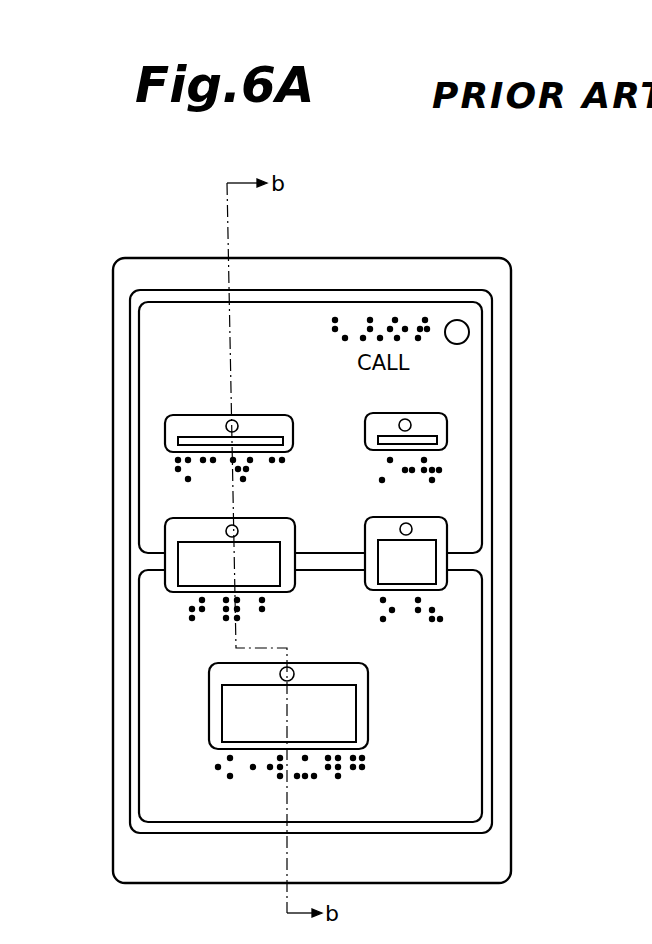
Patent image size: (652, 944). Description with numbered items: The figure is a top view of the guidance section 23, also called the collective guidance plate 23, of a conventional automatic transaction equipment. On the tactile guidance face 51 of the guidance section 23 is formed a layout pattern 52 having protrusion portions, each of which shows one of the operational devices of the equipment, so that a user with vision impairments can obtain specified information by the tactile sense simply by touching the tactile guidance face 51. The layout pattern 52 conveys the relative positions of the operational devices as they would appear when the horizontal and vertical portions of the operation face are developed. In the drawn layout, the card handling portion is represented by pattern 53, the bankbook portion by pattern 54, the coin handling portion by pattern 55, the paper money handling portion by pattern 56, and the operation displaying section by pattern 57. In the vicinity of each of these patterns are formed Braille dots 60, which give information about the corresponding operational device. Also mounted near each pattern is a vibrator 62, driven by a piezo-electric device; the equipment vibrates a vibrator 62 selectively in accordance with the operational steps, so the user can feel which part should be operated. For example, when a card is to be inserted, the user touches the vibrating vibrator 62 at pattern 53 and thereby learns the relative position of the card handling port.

The guidance section 23 is at (170, 275).
The tactile guidance face 51 is at (394, 266).
The layout pattern 52 is at (271, 291).
The card handling portion pattern 53 is at (447, 440).
The bankbook portion pattern 54 is at (165, 433).
The coin handling portion pattern 55 is at (447, 559).
The paper money handling portion pattern 56 is at (185, 576).
The operation displaying section pattern 57 is at (222, 718).
The Braille dots 60 is at (178, 470).
The vibrator 62 is at (226, 421).